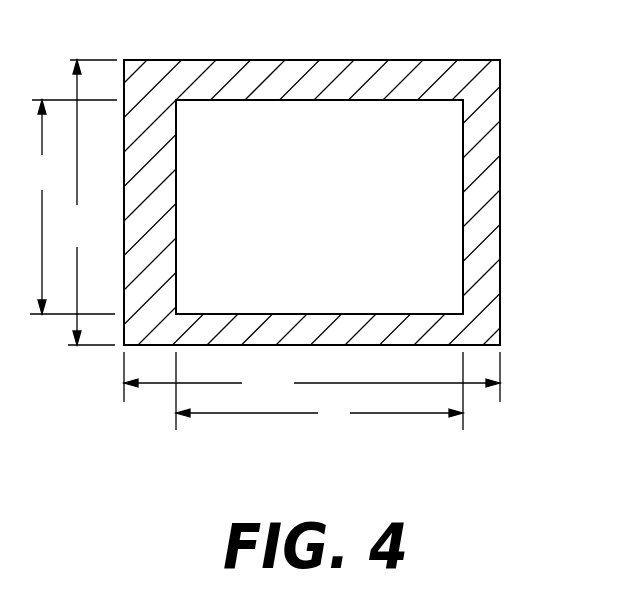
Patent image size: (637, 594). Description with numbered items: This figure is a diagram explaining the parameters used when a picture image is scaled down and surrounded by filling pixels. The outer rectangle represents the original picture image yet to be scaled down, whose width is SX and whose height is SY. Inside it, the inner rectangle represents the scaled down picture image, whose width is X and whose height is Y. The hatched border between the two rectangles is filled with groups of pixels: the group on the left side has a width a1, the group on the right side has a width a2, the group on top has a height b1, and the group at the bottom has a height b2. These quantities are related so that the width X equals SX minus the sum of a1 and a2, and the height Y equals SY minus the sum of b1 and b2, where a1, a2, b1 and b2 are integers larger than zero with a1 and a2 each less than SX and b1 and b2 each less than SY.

The width of left-side pixel group a1 is at (147, 192).
The width of right-side pixel group a2 is at (497, 215).
The height of top pixel group b1 is at (365, 78).
The height of bottom pixel group b2 is at (352, 332).
The height of original picture image SY is at (82, 202).
The height of scaled down picture image Y is at (42, 207).
The width of original picture image SX is at (312, 383).
The width of scaled down picture image X is at (319, 413).